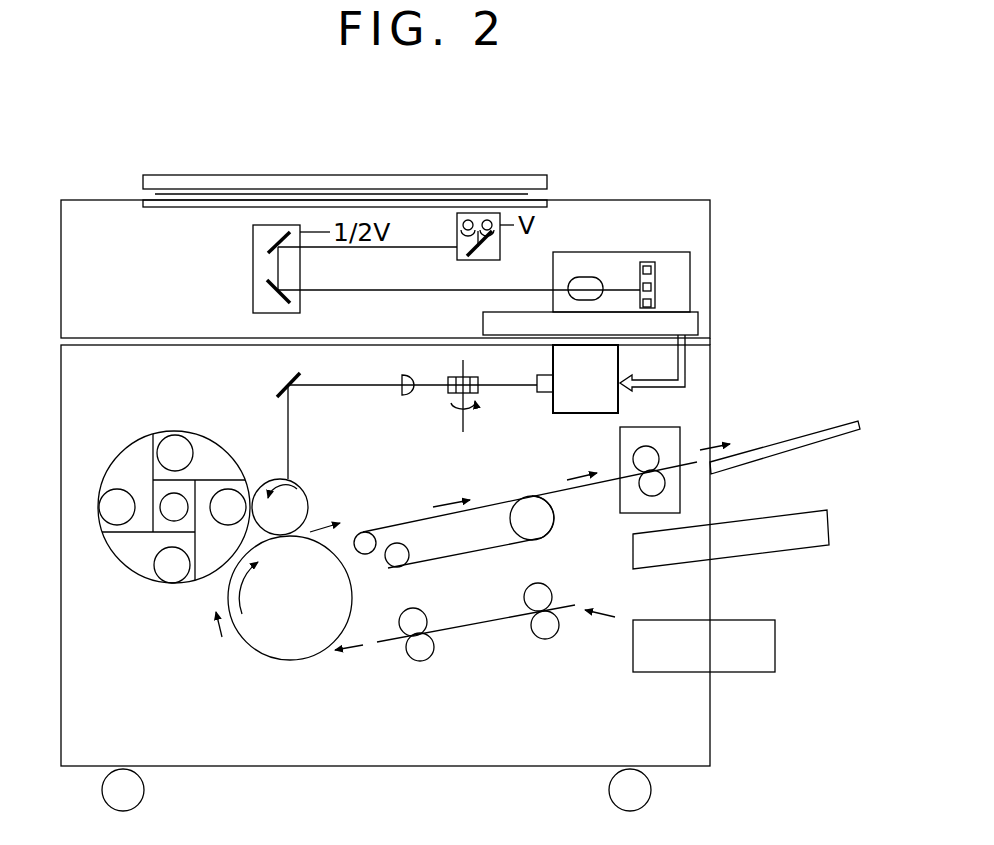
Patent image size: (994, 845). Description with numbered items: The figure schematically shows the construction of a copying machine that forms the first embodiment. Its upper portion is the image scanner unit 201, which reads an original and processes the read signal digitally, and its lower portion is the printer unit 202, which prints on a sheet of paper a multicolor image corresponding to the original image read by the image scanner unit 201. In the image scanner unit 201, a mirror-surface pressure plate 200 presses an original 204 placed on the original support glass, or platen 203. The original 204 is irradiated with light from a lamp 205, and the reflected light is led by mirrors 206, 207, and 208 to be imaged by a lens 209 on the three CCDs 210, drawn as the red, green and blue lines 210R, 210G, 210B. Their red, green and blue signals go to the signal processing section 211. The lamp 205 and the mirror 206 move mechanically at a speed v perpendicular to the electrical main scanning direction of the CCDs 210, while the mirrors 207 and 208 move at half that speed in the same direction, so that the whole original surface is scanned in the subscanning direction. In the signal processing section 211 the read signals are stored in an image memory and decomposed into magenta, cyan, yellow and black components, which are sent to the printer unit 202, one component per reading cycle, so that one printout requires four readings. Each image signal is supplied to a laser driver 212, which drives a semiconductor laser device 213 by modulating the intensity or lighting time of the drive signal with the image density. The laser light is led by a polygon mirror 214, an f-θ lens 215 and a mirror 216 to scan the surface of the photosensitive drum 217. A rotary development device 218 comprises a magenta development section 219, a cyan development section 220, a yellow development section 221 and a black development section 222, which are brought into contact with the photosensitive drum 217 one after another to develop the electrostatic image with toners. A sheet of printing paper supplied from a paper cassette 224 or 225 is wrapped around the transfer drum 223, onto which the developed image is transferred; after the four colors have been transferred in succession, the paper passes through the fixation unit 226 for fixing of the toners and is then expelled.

The mirror-surface pressure plate 200 is at (245, 175).
The image scanner unit 201 is at (667, 199).
The printer unit 202 is at (711, 370).
The original support glass (platen) 203 is at (547, 200).
The original 204 is at (523, 193).
The lamp 205 is at (487, 219).
The mirror 206 is at (467, 258).
The mirror 207 is at (268, 252).
The mirror 208 is at (264, 290).
The lens 209 is at (580, 277).
The CCDs 210 is at (657, 276).
The red CCD 210R is at (655, 268).
The green CCD 210G is at (657, 288).
The blue CCD 210B is at (657, 302).
The signal processing section 211 is at (700, 325).
The laser driver 212 is at (618, 402).
The semiconductor laser device 213 is at (536, 396).
The polygon mirror 214 is at (472, 376).
The f-θ lens 215 is at (407, 398).
The mirror 216 is at (278, 390).
The photosensitive drum 217 is at (305, 485).
The rotary development device 218 is at (207, 434).
The magenta development section 219 is at (225, 488).
The cyan development section 220 is at (175, 583).
The yellow development section 221 is at (100, 512).
The black development section 222 is at (170, 433).
The transfer drum 223 is at (291, 661).
The paper cassette 224 is at (745, 620).
The paper cassette 225 is at (765, 514).
The fixation unit 226 is at (683, 430).